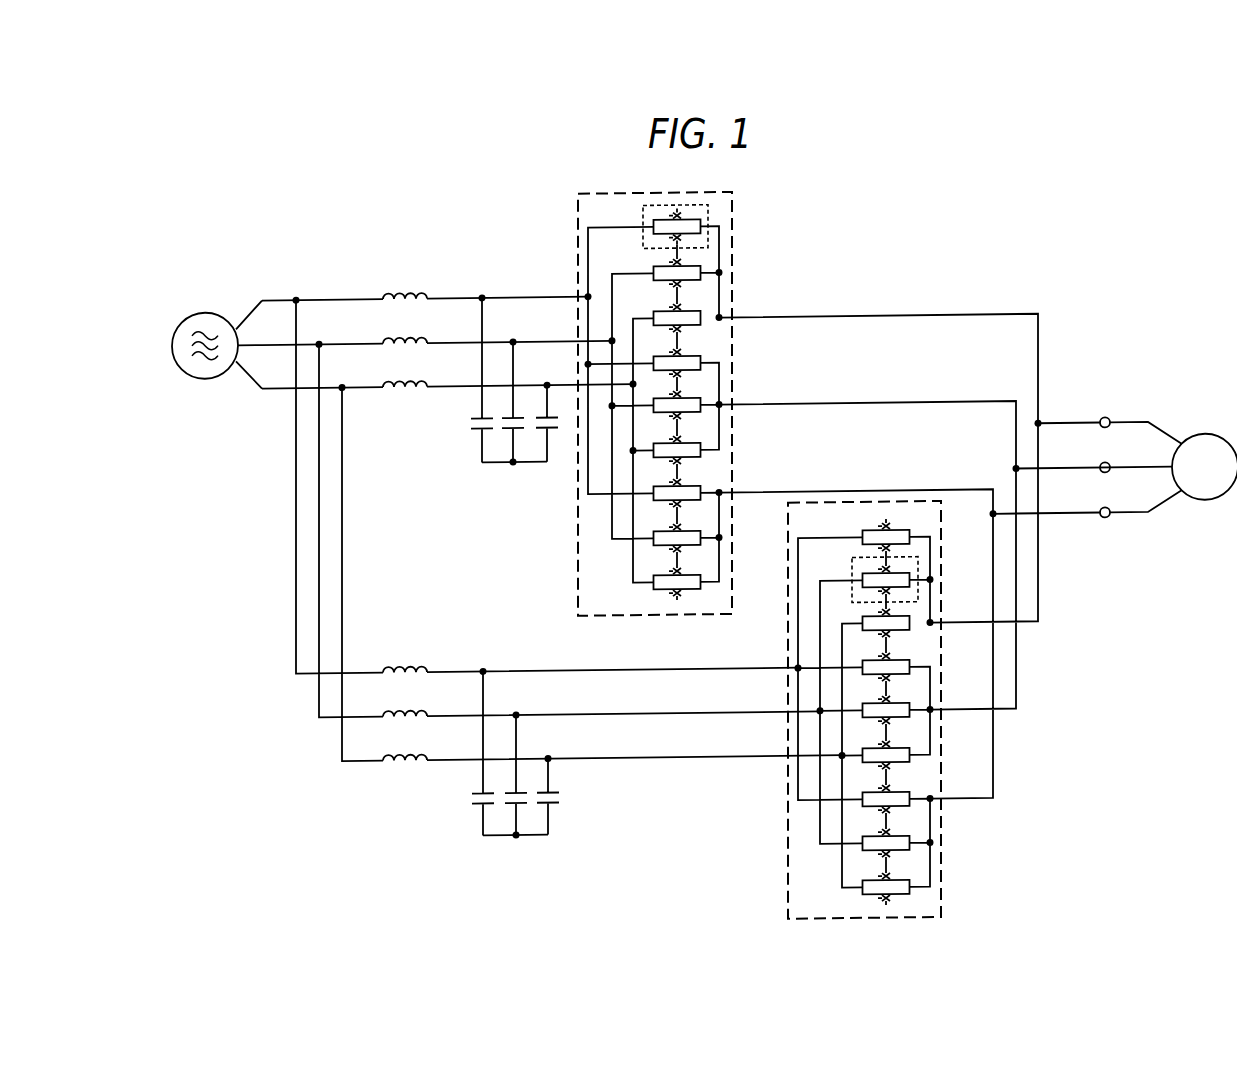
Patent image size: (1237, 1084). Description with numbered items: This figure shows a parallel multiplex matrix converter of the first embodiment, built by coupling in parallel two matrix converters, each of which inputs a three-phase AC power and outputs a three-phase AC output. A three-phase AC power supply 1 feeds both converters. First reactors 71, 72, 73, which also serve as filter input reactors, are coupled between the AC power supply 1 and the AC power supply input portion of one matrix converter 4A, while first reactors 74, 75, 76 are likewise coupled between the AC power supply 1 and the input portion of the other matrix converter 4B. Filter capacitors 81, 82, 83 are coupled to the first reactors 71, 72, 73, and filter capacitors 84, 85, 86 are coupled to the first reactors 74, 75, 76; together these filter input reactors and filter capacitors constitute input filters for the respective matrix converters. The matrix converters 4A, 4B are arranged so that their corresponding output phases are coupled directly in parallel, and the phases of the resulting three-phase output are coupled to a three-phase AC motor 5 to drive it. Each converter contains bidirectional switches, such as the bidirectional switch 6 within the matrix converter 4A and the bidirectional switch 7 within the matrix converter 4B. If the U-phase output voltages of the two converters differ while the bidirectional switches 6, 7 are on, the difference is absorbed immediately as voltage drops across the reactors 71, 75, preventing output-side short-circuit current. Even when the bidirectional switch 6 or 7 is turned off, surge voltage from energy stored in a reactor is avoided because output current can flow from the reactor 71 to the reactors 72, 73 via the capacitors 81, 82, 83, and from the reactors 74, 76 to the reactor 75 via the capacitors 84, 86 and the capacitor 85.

The three-phase AC power supply 1 is at (205, 307).
The matrix converter 4A is at (619, 404).
The matrix converter 4B is at (904, 709).
The three-phase AC motor 5 is at (1200, 441).
The bidirectional switch 6 is at (643, 222).
The bidirectional switch 7 is at (852, 568).
The first reactor 71 is at (383, 290).
The first reactor 72 is at (383, 335).
The first reactor 73 is at (383, 379).
The first reactor 74 is at (432, 666).
The first reactor 75 is at (432, 710).
The first reactor 76 is at (432, 754).
The filter capacitor 81 is at (473, 430).
The filter capacitor 82 is at (508, 430).
The filter capacitor 83 is at (553, 430).
The filter capacitor 84 is at (480, 806).
The filter capacitor 85 is at (513, 806).
The filter capacitor 86 is at (555, 806).